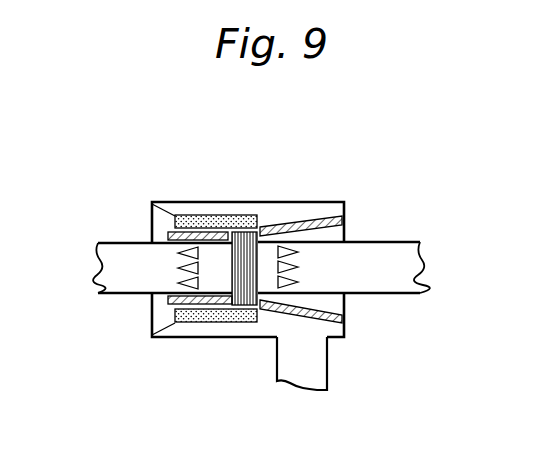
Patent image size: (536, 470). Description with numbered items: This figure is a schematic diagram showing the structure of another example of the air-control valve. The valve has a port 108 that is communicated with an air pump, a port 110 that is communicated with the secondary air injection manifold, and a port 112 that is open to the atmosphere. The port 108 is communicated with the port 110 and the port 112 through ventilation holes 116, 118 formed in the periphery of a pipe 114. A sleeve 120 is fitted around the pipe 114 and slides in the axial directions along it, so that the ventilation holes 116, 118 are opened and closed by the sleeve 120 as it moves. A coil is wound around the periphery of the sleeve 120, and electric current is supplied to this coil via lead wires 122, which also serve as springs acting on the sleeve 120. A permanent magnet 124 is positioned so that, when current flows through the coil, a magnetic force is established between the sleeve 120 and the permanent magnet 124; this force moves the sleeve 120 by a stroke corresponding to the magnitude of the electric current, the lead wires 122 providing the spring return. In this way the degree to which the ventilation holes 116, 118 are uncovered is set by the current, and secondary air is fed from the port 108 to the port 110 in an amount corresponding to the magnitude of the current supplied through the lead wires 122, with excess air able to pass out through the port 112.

The port 108 is at (313, 391).
The port 110 is at (98, 275).
The port 112 is at (423, 268).
The pipe 114 is at (383, 283).
The ventilation hole 116 is at (178, 252).
The ventilation hole 118 is at (284, 246).
The sleeve 120 is at (236, 306).
The lead wires 122 is at (327, 316).
The permanent magnet 124 is at (203, 322).